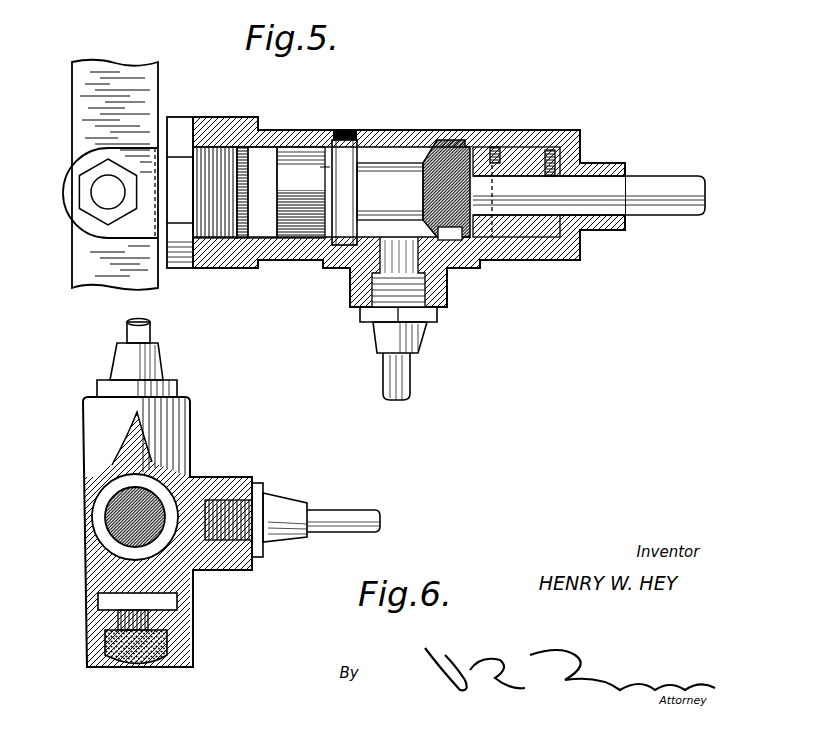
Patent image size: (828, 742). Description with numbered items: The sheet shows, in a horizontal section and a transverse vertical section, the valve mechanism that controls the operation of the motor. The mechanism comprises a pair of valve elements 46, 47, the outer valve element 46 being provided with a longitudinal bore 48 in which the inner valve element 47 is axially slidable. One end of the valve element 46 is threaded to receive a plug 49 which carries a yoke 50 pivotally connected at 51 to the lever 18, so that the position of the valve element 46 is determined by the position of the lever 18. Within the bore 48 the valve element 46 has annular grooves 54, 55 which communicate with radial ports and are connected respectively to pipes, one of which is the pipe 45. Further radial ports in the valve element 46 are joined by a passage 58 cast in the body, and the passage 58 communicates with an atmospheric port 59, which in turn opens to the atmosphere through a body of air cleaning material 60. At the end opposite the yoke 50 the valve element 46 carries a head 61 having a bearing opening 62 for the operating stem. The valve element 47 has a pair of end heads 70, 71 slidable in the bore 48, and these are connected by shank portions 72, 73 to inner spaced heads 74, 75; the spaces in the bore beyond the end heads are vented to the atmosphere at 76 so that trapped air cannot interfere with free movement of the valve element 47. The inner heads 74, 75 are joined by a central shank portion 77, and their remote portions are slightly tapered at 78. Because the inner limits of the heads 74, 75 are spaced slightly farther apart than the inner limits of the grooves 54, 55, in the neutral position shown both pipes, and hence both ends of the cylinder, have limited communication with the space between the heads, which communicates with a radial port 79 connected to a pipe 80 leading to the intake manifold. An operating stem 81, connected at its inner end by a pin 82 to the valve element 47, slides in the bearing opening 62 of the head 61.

In FIG. 5, the lever 18 is at (75, 88).
In FIG. 6, the pipe 45 is at (152, 325).
In FIG. 5, the valve element 46 is at (198, 118).
In FIG. 6, the valve element 46 is at (100, 472).
In FIG. 5, the valve element 47 is at (285, 162).
In FIG. 6, the valve element 47 is at (150, 490).
In FIG. 5, the longitudinal bore 48 is at (293, 245).
In FIG. 5, the plug 49 is at (212, 262).
In FIG. 5, the yoke 50 is at (70, 172).
In FIG. 5, the pivotal connection 51 is at (100, 186).
In FIG. 5, the annular groove 54 is at (349, 135).
In FIG. 5, the annular groove 55 is at (450, 242).
In FIG. 6, the annular groove 55 is at (118, 463).
In FIG. 6, the passage 58 is at (143, 612).
In FIG. 6, the atmospheric port 59 is at (137, 602).
In FIG. 6, the air cleaning material 60 is at (135, 668).
In FIG. 5, the head 61 is at (585, 138).
In FIG. 5, the bearing opening 62 is at (608, 165).
In FIG. 5, the end head 70 is at (263, 150).
In FIG. 5, the end head 71 is at (532, 162).
In FIG. 5, the shank portion 72 is at (301, 192).
In FIG. 5, the shank portion 73 is at (500, 155).
In FIG. 5, the inner head 74 is at (344, 192).
In FIG. 5, the inner head 75 is at (478, 240).
In FIG. 6, the inner head 75 is at (103, 540).
In FIG. 5, the vent 76 is at (243, 145).
In FIG. 5, the central shank portion 77 is at (390, 191).
In FIG. 6, the central shank portion 77 is at (122, 535).
In FIG. 5, the taper 78 is at (322, 170).
In FIG. 5, the radial port 79 is at (398, 271).
In FIG. 6, the radial port 79 is at (212, 500).
In FIG. 5, the pipe 80 is at (412, 373).
In FIG. 6, the pipe 80 is at (332, 512).
In FIG. 5, the operating stem 81 is at (662, 185).
In FIG. 5, the pin 82 is at (509, 201).